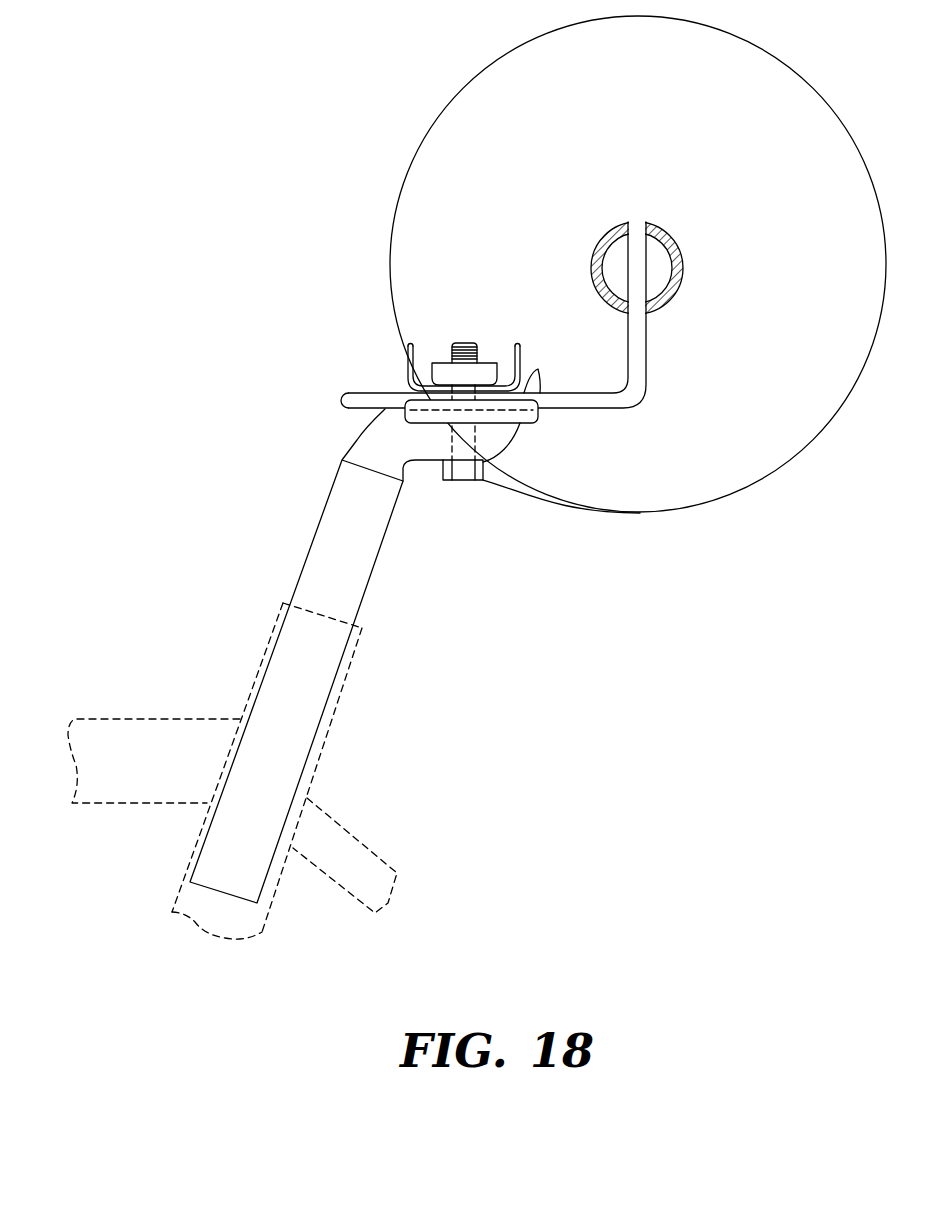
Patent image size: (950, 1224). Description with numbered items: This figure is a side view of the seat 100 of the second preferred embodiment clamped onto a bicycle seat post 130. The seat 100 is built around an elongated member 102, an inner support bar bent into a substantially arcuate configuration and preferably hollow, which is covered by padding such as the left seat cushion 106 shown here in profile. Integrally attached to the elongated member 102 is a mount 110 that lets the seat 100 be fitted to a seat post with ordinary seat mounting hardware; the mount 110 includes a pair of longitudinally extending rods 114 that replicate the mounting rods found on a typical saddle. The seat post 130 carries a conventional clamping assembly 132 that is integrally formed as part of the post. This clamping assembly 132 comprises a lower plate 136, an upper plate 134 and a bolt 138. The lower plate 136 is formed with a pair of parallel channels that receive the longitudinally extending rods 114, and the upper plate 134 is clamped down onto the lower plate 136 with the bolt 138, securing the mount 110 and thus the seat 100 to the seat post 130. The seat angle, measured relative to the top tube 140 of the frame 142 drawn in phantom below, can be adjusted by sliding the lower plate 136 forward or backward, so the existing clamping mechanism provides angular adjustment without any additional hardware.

The seat 100 is at (289, 80).
The elongated member 102 is at (600, 244).
The left seat cushion 106 is at (415, 278).
The mount 110 is at (429, 407).
The longitudinally extending rods 114 is at (593, 404).
The seat post 130 is at (338, 533).
The clamping assembly 132 is at (479, 328).
The upper plate 134 is at (403, 368).
The lower plate 136 is at (527, 421).
The bolt 138 is at (463, 481).
The top tube 140 is at (185, 730).
The frame 142 is at (350, 663).